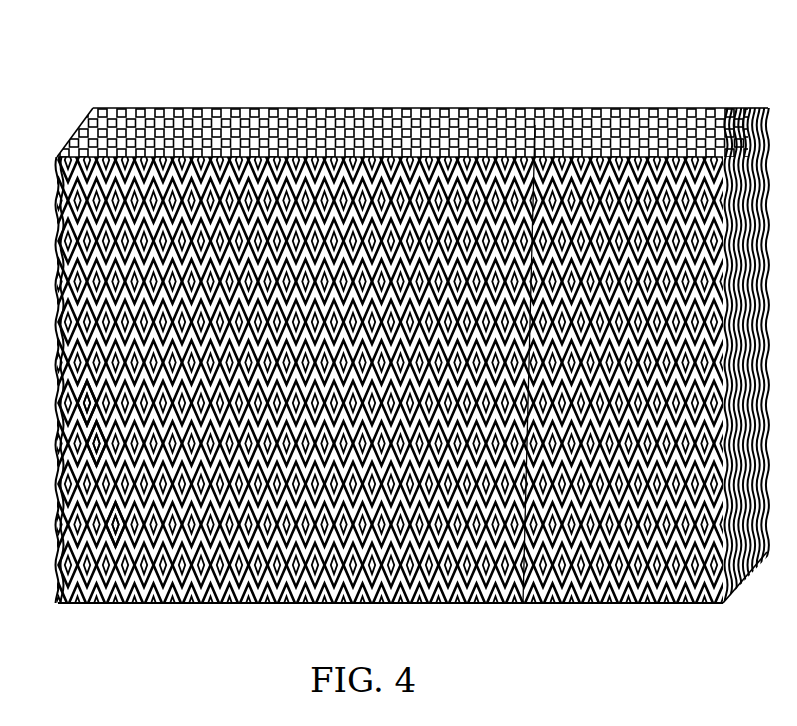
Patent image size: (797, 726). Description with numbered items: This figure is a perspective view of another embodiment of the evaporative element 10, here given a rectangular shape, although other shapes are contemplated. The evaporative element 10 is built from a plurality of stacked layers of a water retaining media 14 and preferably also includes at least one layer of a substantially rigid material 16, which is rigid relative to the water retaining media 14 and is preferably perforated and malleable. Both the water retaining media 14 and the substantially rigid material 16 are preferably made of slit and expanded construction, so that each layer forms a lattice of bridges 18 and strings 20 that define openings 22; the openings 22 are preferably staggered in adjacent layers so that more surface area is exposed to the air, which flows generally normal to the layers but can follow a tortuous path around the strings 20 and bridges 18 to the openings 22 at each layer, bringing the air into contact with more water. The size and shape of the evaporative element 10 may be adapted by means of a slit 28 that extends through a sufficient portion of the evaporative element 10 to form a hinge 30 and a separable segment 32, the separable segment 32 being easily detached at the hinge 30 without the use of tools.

The evaporative element 10 is at (171, 607).
The water retaining media 14 is at (167, 108).
The substantially rigid material 16 is at (75, 277).
The bridges 18 is at (92, 420).
The strings 20 is at (90, 457).
The openings 22 is at (113, 535).
The slit 28 is at (537, 165).
The hinge 30 is at (563, 140).
The separable segment 32 is at (697, 228).